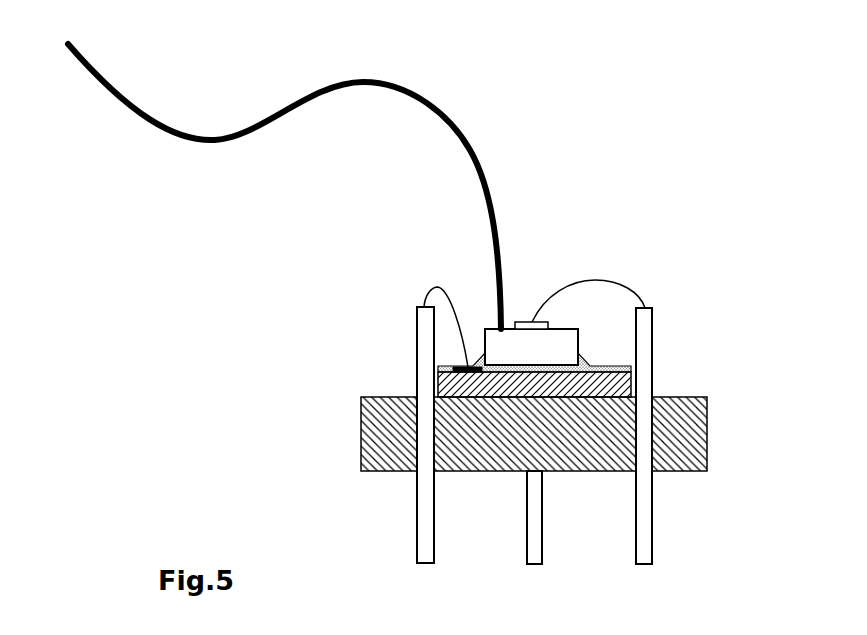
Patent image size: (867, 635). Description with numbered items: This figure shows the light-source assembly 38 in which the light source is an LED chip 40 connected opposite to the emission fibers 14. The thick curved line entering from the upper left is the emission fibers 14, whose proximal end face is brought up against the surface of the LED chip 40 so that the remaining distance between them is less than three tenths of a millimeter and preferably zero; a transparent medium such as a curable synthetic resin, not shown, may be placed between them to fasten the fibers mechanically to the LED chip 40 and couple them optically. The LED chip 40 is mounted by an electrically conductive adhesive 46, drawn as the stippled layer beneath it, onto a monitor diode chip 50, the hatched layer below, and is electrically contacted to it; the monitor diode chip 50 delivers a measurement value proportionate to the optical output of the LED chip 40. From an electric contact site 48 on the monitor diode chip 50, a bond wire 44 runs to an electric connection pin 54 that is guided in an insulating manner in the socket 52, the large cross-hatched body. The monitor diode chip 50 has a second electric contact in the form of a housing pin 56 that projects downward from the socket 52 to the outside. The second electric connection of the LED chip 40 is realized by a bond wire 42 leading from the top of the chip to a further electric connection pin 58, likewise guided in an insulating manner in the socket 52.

The emission fibers 14 is at (461, 128).
The semiconductor assembly 38 is at (620, 147).
The LED chip 40 is at (525, 355).
The bond wire 42 is at (608, 278).
The bond wire 44 is at (442, 290).
The electrically conductive adhesive 46 is at (586, 366).
The electric contact site 48 is at (463, 367).
The monitor diode chip 50 is at (438, 388).
The socket 52 is at (383, 427).
The electric connection pin 54 is at (425, 518).
The housing pin 56 is at (534, 540).
The electric connection pin 58 is at (645, 534).